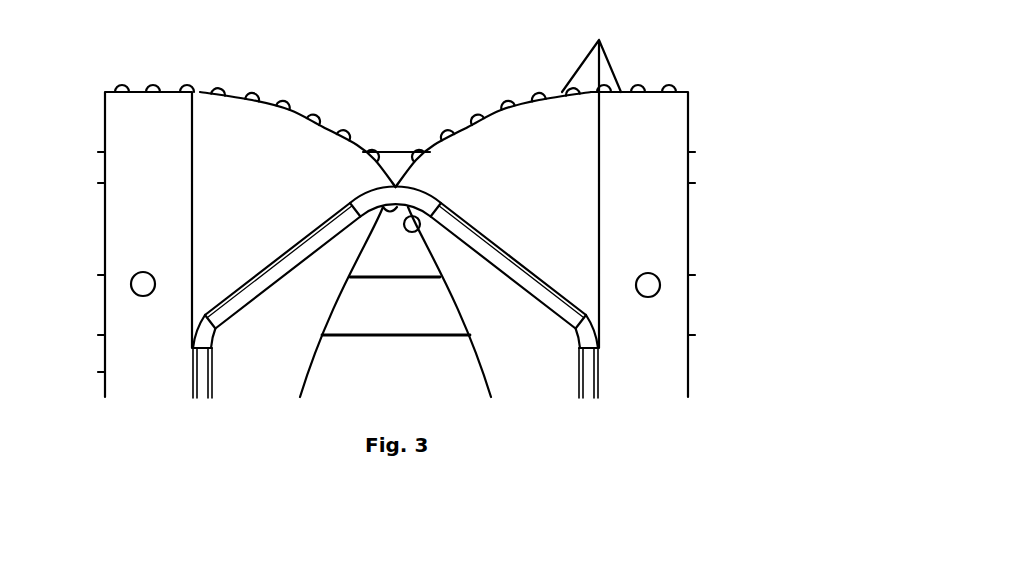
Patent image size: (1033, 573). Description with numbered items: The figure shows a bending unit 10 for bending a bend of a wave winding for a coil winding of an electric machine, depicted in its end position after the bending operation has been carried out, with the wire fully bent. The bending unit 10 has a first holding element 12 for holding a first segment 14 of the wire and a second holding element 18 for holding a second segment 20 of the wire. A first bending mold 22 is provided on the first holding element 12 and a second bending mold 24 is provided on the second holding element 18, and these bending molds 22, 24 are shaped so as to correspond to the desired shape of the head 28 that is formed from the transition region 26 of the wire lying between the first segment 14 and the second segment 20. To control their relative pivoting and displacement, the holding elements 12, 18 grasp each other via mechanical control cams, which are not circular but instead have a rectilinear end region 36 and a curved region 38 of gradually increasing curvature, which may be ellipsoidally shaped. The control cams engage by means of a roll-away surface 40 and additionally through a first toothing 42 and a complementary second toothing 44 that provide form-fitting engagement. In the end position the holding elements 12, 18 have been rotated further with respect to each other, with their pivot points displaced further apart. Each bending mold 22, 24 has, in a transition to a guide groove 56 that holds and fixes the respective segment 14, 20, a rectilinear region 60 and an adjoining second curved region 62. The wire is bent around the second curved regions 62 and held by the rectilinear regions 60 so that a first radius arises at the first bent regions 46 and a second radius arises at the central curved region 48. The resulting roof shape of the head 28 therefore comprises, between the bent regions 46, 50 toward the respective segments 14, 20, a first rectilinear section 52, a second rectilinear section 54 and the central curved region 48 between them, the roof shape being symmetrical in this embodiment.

The bending unit 10 is at (563, 466).
The first holding element 12 is at (62, 224).
The first segment 14 is at (200, 380).
The second holding element 18 is at (712, 305).
The second segment 20 is at (600, 380).
The first bending mold 22 is at (277, 307).
The second bending mold 24 is at (518, 317).
The transition region 26 is at (284, 204).
The head 28 is at (351, 181).
The rectilinear end region 36 is at (145, 73).
The curved region 38 is at (268, 100).
The roll-away surface 40 is at (328, 120).
The first toothing 42 is at (200, 88).
The second toothing 44 is at (591, 50).
The first bent region 46 is at (192, 331).
The central curved region 48 is at (396, 185).
The second bent region 50 is at (593, 322).
The first rectilinear section 52 is at (253, 287).
The second rectilinear section 54 is at (507, 261).
The guide groove 56 is at (192, 393).
The rectilinear region 60 is at (292, 268).
The second curved region 62 is at (418, 232).